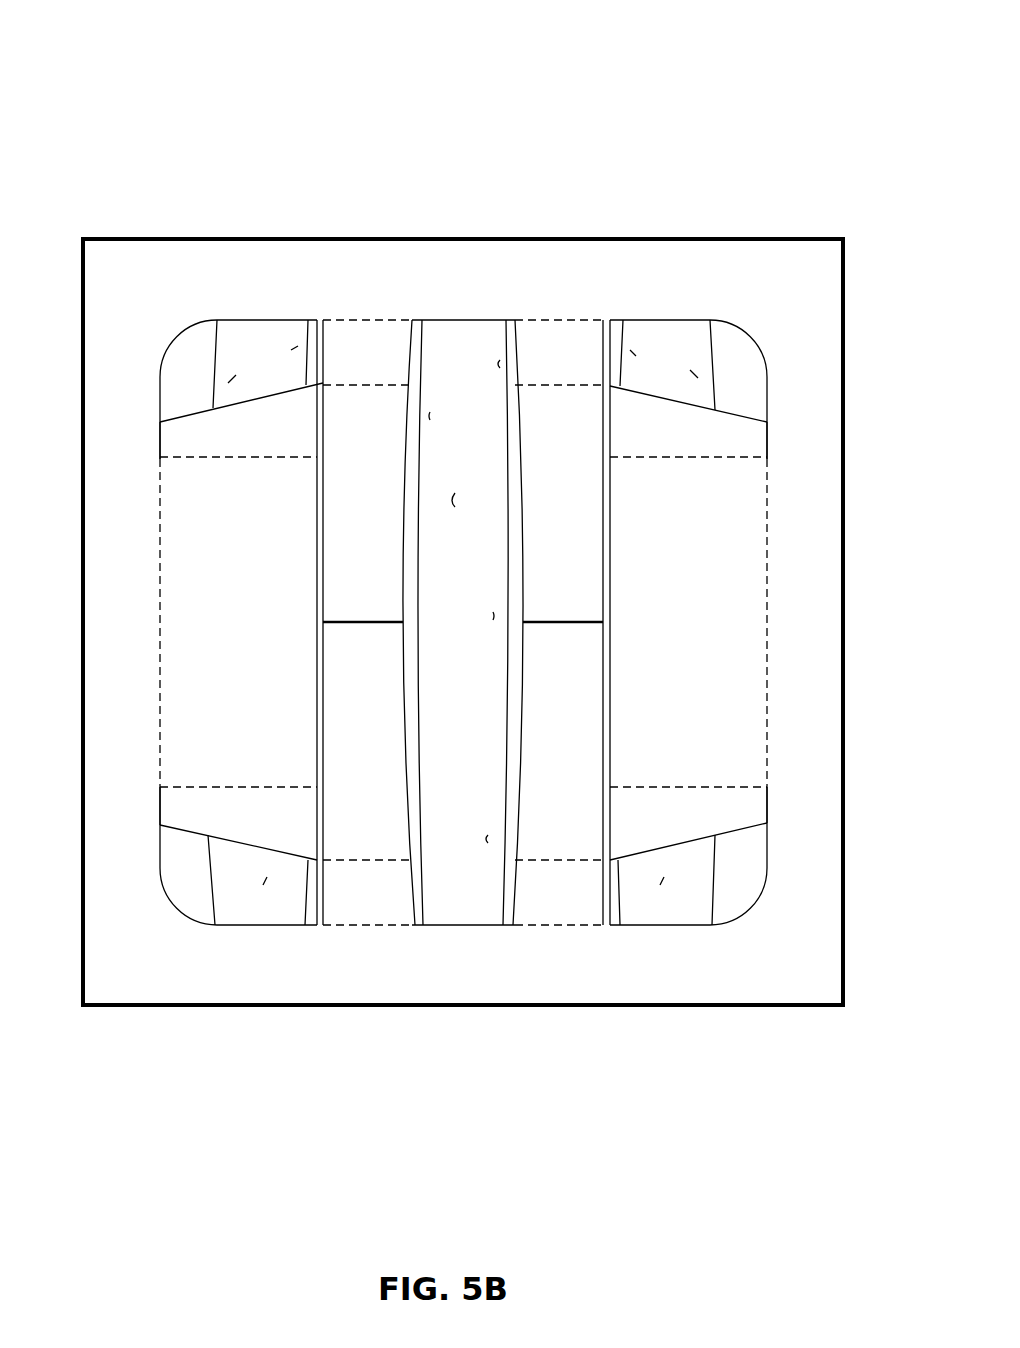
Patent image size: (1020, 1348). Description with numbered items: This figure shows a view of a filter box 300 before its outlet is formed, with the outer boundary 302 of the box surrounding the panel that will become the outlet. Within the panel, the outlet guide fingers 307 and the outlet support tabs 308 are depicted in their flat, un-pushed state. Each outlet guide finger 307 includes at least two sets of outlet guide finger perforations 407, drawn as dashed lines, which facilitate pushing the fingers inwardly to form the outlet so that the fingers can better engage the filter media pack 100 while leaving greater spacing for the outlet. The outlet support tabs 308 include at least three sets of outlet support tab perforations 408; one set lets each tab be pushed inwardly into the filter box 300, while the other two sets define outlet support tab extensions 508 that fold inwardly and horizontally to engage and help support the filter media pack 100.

The filter box 300 is at (161, 42).
The housing frame 302 is at (127, 238).
The filter media pack 100 is at (246, 360).
The outlet guide fingers 307 is at (346, 450).
The outlet guide finger perforations 407 is at (379, 384).
The outlet support tab perforations 408 is at (203, 458).
The outlet support tabs 308 is at (193, 616).
The outlet support tab extensions 508 is at (182, 442).